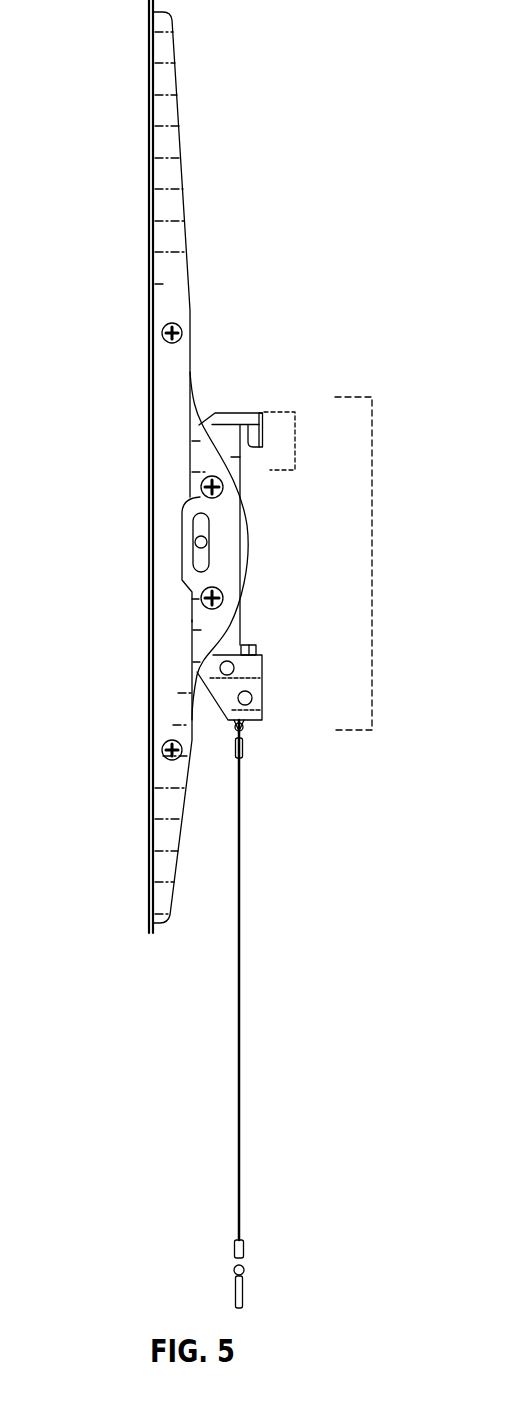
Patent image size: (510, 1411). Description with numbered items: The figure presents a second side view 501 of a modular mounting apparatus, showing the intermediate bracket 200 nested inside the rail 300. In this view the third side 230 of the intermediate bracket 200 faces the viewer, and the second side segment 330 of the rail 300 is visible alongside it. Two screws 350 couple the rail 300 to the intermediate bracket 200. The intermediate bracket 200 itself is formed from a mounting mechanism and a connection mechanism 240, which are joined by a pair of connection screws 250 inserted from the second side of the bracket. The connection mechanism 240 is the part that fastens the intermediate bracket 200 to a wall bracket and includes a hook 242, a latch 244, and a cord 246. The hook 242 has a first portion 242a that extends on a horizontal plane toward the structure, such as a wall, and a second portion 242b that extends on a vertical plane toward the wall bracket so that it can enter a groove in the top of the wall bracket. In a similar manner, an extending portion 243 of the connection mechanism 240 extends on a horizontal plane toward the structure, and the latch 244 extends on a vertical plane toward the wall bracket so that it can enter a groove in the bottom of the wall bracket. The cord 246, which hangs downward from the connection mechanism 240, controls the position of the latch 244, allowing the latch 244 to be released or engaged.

The second side view 501 is at (108, 82).
The rail 300 is at (177, 98).
The second side segment 330 is at (170, 276).
The screws 350 is at (162, 337).
The intermediate bracket 200 is at (240, 580).
The third side 230 is at (235, 506).
The connection screws 250 is at (200, 492).
The connection mechanism 240 is at (373, 506).
The hook 242 is at (284, 412).
The first portion of the hook 242a is at (235, 411).
The second portion of the hook 242b is at (264, 427).
The extending portion 243 is at (263, 690).
The latch 244 is at (256, 647).
The cord 246 is at (240, 1003).